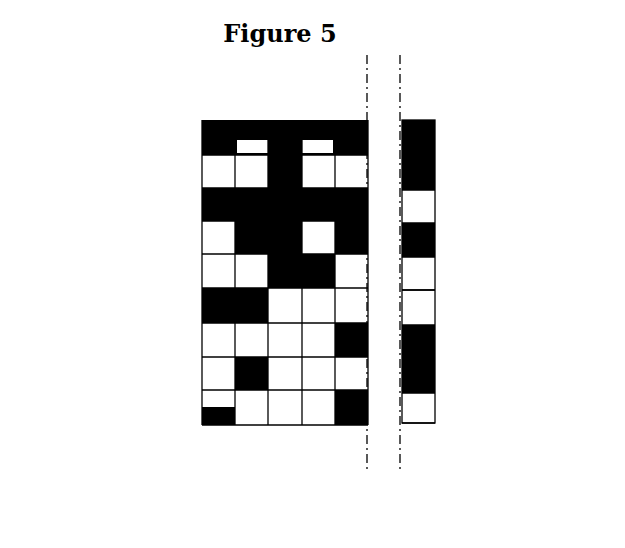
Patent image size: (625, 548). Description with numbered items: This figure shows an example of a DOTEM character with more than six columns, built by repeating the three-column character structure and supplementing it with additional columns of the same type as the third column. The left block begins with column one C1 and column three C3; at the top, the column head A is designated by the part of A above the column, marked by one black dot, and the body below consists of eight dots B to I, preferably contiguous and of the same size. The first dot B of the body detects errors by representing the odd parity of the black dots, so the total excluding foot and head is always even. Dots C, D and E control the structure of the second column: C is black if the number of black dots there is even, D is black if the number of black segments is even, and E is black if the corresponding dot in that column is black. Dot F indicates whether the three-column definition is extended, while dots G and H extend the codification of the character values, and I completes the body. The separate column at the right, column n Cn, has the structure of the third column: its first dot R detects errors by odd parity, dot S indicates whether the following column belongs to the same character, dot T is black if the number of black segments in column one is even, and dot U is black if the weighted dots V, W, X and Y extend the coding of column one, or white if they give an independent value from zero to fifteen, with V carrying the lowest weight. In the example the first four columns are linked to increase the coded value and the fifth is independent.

The column head A is at (180, 118).
The first dot of the body B is at (190, 172).
The dot C is at (200, 205).
The dot D is at (190, 240).
The dot E is at (200, 272).
The dot F is at (190, 307).
The dot G is at (200, 338).
The dot H is at (190, 373).
The dot I is at (200, 407).
The first dot R is at (446, 172).
The dot S is at (436, 205).
The dot T is at (446, 240).
The dot U is at (436, 273).
The dot V is at (446, 307).
The dot W is at (436, 340).
The dot X is at (446, 375).
The dot Y is at (436, 407).
The column one C1 is at (216, 456).
The column three C3 is at (283, 456).
The column n Cn is at (415, 456).